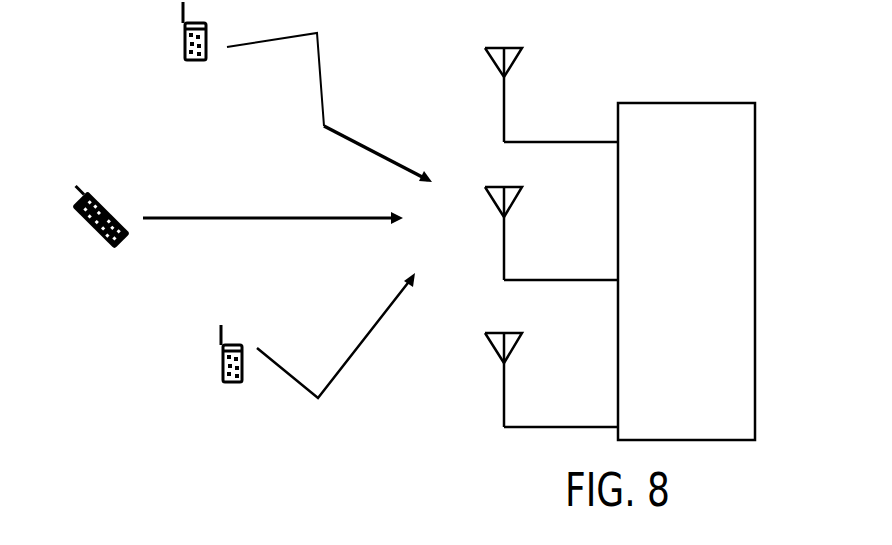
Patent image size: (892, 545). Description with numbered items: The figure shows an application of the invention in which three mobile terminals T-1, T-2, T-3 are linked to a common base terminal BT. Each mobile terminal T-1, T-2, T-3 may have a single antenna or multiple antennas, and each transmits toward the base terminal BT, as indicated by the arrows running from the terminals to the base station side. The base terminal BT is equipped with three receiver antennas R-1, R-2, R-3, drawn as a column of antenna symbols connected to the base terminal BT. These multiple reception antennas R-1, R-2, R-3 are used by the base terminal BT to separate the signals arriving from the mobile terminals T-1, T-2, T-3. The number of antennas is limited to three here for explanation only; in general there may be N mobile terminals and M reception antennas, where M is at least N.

The mobile terminal T-1 is at (300, 92).
The mobile terminal T-2 is at (233, 234).
The mobile terminal T-3 is at (310, 349).
The receiver antenna R-1 is at (551, 95).
The receiver antenna R-2 is at (551, 233).
The receiver antenna R-3 is at (551, 380).
The base terminal BT is at (686, 271).